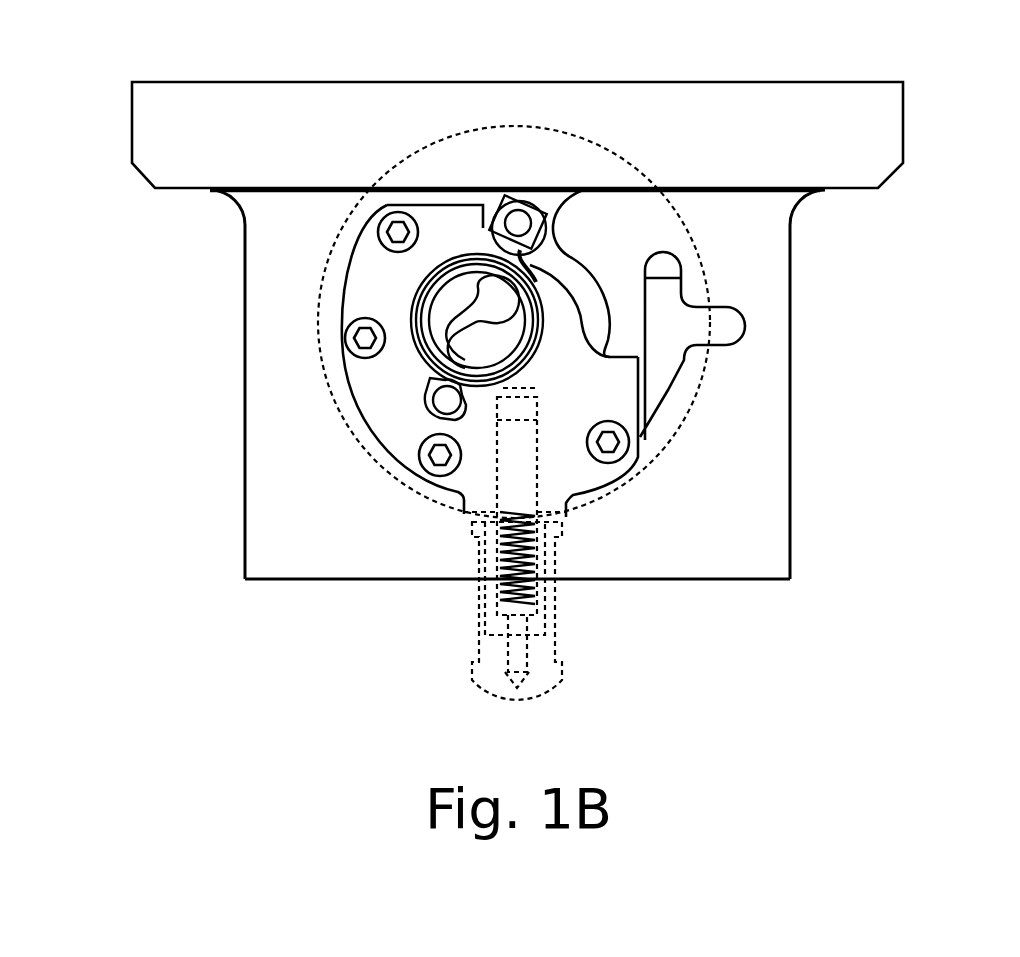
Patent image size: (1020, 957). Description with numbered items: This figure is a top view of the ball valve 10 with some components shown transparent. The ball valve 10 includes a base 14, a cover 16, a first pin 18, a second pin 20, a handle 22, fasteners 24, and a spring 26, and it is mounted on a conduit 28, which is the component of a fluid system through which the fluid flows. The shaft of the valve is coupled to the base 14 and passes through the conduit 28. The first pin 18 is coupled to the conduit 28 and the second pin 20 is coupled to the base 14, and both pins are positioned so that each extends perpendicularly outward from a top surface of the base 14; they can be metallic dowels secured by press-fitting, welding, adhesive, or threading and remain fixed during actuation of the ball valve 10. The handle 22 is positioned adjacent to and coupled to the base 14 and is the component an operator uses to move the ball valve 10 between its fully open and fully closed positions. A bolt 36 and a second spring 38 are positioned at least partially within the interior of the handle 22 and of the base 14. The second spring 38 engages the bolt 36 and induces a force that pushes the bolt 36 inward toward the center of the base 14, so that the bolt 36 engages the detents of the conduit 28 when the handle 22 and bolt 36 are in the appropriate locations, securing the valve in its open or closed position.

The ball valve 10 is at (290, 241).
The base 14 is at (610, 375).
The cover 16 is at (642, 240).
The first pin 18 is at (518, 223).
The second pin 20 is at (447, 400).
The handle 22 is at (540, 650).
The fasteners 24 is at (365, 338).
The spring 26 is at (410, 296).
The conduit 28 is at (715, 530).
The bolt 36 is at (522, 408).
The second spring 38 is at (505, 598).